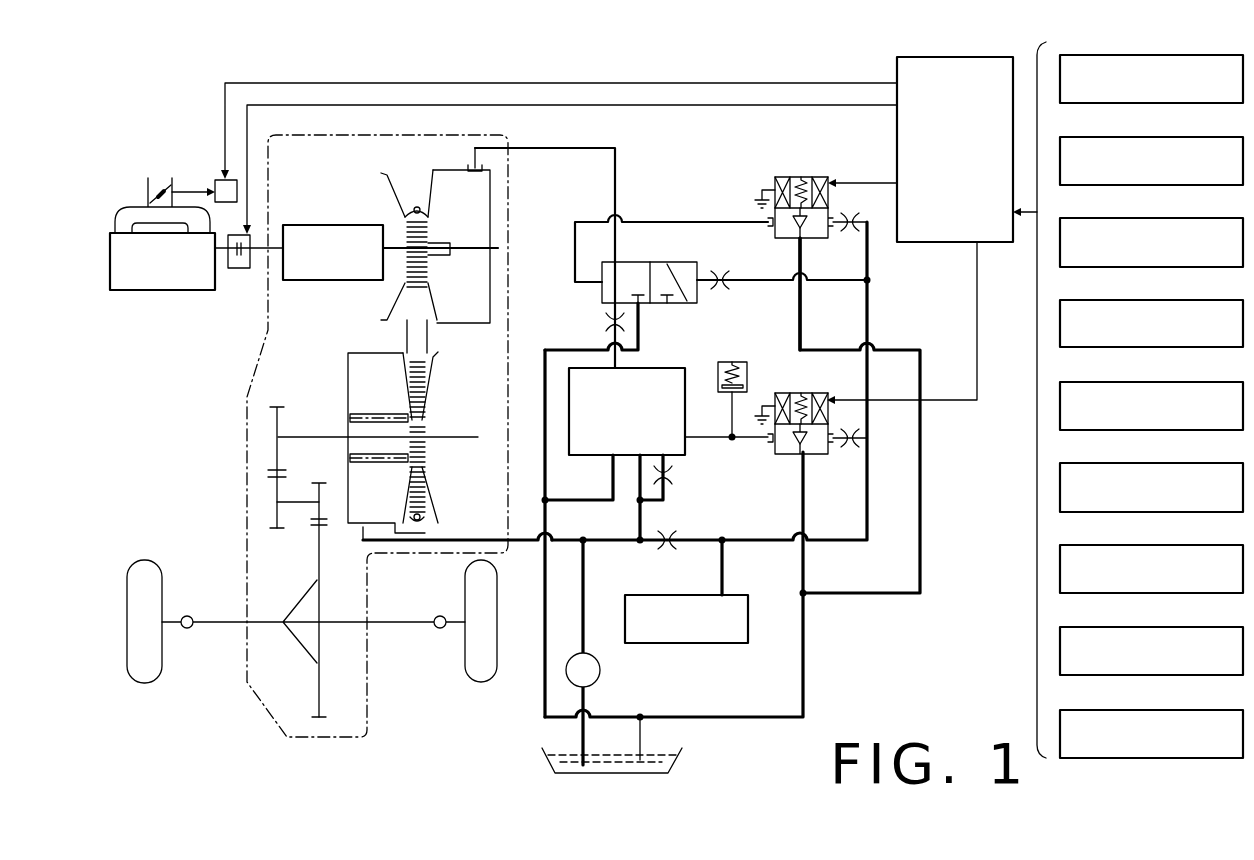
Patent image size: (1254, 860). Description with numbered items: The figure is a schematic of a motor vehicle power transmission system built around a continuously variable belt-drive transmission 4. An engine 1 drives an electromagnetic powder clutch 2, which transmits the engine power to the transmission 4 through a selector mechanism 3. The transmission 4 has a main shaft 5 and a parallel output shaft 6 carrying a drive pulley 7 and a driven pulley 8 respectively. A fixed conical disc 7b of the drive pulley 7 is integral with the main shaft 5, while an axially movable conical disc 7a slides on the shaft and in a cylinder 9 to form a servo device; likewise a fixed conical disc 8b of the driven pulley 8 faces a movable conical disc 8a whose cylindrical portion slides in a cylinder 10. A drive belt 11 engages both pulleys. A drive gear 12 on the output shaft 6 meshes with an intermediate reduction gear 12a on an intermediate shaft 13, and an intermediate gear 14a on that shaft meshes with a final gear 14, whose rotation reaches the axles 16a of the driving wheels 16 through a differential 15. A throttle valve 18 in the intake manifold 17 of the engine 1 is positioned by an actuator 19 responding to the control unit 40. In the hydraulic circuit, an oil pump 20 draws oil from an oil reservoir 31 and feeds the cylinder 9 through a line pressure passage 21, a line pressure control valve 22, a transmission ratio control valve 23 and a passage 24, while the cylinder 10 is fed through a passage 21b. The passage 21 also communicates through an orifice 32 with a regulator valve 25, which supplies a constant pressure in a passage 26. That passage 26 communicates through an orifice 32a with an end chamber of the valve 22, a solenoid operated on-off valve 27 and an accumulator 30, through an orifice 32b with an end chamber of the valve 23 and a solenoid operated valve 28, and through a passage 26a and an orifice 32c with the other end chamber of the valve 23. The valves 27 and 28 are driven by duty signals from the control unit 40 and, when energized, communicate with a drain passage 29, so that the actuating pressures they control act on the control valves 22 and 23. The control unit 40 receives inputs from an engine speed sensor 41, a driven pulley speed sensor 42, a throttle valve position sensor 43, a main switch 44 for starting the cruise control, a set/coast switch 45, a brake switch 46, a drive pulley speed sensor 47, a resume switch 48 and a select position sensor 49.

The engine 1 is at (157, 284).
The electromagnetic powder clutch 2 is at (243, 269).
The selector mechanism 3 is at (322, 224).
The continuously variable belt-drive transmission 4 is at (421, 183).
The main shaft 5 is at (395, 255).
The output shaft 6 is at (327, 437).
The drive pulley 7 is at (388, 166).
The movable conical disc 7a is at (435, 196).
The fixed conical disc 7b is at (393, 211).
The driven pulley 8 is at (442, 473).
The movable conical disc 8a is at (407, 385).
The fixed conical disc 8b is at (433, 362).
The cylinder 9 is at (478, 233).
The cylinder 10 is at (358, 368).
The drive belt 11 is at (413, 501).
The drive gear 12 is at (281, 404).
The intermediate reduction gear 12a is at (278, 531).
The intermediate shaft 13 is at (300, 521).
The final gear 14 is at (322, 716).
The intermediate gear 14a is at (320, 483).
The differential 15 is at (303, 638).
The driving wheels 16 is at (466, 661).
The axles 16a is at (441, 616).
The intake manifold 17 is at (131, 211).
The throttle valve 18 is at (162, 182).
The actuator 19 is at (215, 185).
The oil pump 20 is at (598, 676).
The line pressure passage 21 is at (620, 545).
The passage 21b is at (536, 543).
The line pressure control valve 22 is at (598, 456).
The transmission ratio control valve 23 is at (668, 262).
The passage 24 is at (581, 148).
The regulator valve 25 is at (692, 644).
The passage 26 is at (775, 543).
The passage 26a is at (833, 283).
The solenoid operated on-off valve 27 is at (806, 393).
The solenoid operated valve 28 is at (821, 177).
The drain passage 29 is at (803, 672).
The accumulator 30 is at (730, 362).
The oil reservoir 31 is at (682, 751).
The orifice 32 is at (672, 548).
The orifice 32a is at (851, 446).
The orifice 32b is at (851, 232).
The orifice 32c is at (726, 291).
The control unit 40 is at (960, 243).
The engine speed sensor 41 is at (1180, 758).
The driven pulley speed sensor 42 is at (1180, 185).
The throttle valve position sensor 43 is at (1180, 267).
The main switch 44 is at (1180, 347).
The set/coast switch 45 is at (1180, 675).
The brake switch 46 is at (1180, 430).
The drive pulley speed sensor 47 is at (1180, 103).
The resume switch 48 is at (1180, 593).
The select position sensor 49 is at (1180, 512).